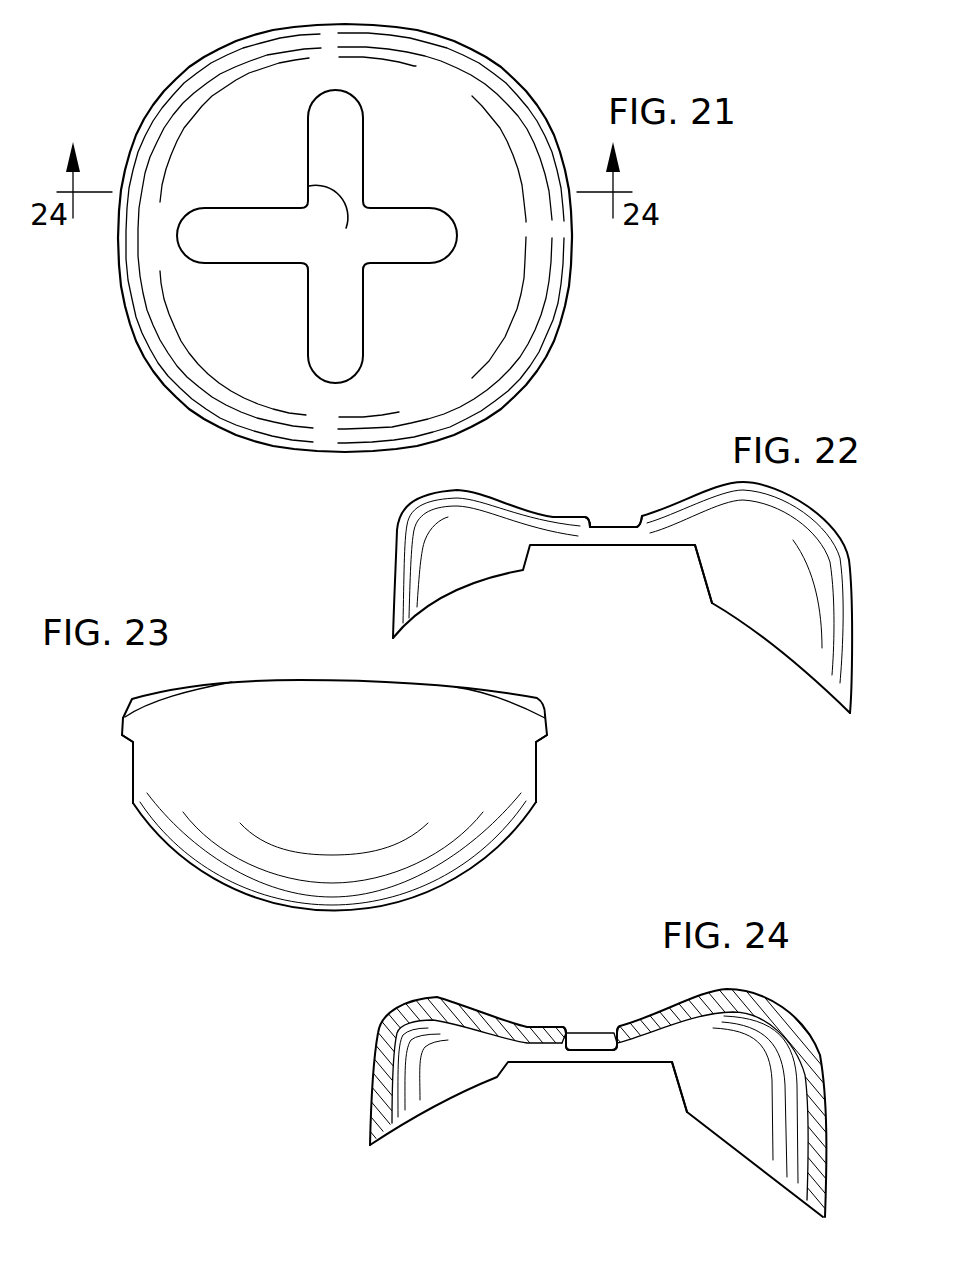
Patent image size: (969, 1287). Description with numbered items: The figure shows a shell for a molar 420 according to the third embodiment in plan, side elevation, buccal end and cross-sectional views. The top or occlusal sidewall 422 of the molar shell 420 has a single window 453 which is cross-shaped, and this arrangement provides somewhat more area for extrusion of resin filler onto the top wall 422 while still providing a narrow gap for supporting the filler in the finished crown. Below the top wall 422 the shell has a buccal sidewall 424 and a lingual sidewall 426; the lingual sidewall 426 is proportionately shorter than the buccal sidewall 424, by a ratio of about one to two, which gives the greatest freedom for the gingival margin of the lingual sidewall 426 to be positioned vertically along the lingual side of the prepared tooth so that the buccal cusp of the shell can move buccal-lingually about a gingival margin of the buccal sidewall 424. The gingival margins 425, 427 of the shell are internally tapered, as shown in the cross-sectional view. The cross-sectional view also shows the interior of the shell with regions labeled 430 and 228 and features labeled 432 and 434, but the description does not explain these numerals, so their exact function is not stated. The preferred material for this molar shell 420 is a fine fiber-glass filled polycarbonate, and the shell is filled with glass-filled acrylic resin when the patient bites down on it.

In FIG. 21, the shell for a molar 420 is at (522, 72).
In FIG. 22, the shell for a molar 420 is at (523, 495).
In FIG. 23, the shell for a molar 420 is at (475, 673).
In FIG. 24, the shell for a molar 420 is at (480, 1000).
In FIG. 21, the top or occlusal sidewall 422 is at (432, 318).
In FIG. 23, the top or occlusal sidewall 422 is at (240, 680).
In FIG. 24, the top or occlusal sidewall 422 is at (688, 997).
In FIG. 21, the buccal sidewall 424 is at (200, 313).
In FIG. 22, the buccal sidewall 424 is at (850, 580).
In FIG. 23, the buccal sidewall 424 is at (420, 813).
In FIG. 24, the buccal sidewall 424 is at (825, 1127).
In FIG. 22, the gingival margin 425 is at (850, 687).
In FIG. 23, the gingival margin 425 is at (293, 910).
In FIG. 24, the gingival margin 425 is at (828, 1205).
In FIG. 21, the lingual sidewall 426 is at (542, 322).
In FIG. 22, the lingual sidewall 426 is at (393, 560).
In FIG. 24, the lingual sidewall 426 is at (372, 1065).
In FIG. 22, the gingival margin 427 is at (392, 625).
In FIG. 24, the gingival margin 427 is at (370, 1133).
In FIG. 22, the interior cavity 430 is at (782, 592).
In FIG. 23, the shoulder 432 is at (543, 778).
In FIG. 24, the shoulder 432 is at (680, 1100).
In FIG. 22, the step 434 is at (705, 583).
In FIG. 23, the step 434 is at (128, 772).
In FIG. 21, the window 453 is at (282, 210).
In FIG. 22, the window 453 is at (618, 487).
In FIG. 24, the window 453 is at (597, 1038).
In FIG. 24, the interior cavity 228 is at (743, 1080).